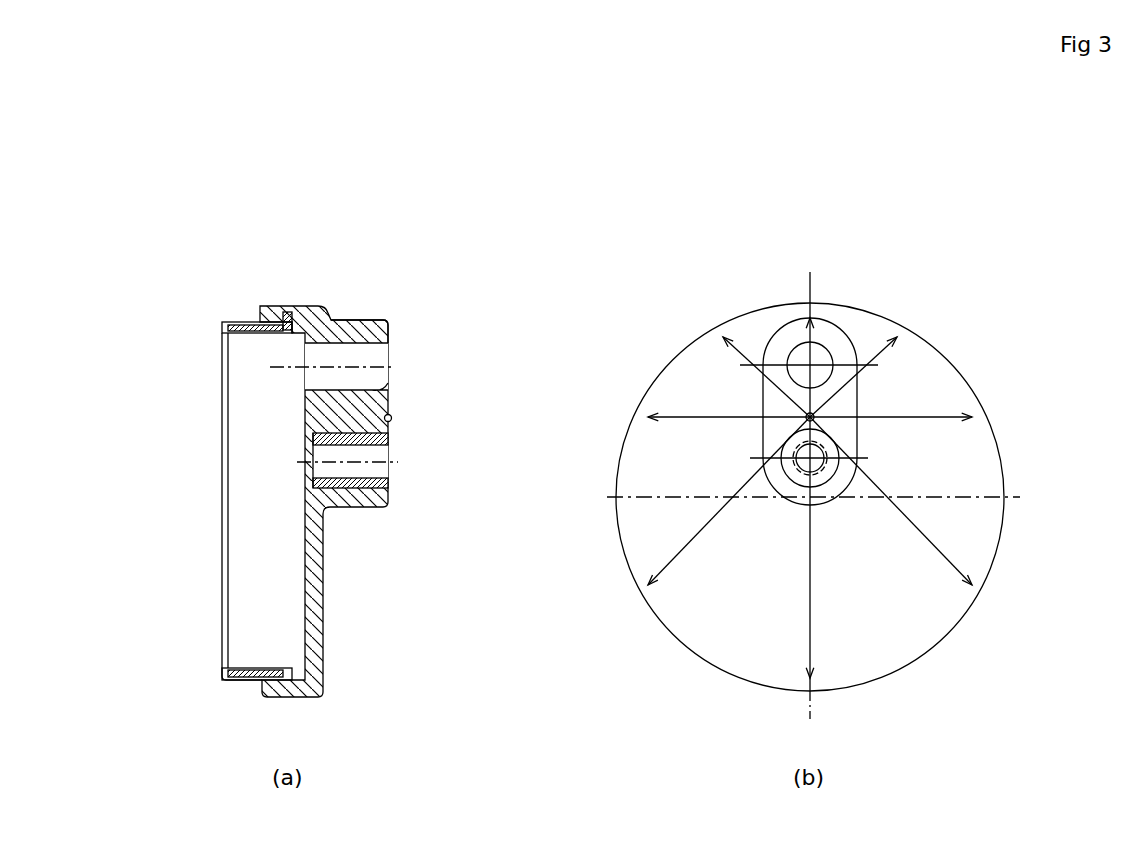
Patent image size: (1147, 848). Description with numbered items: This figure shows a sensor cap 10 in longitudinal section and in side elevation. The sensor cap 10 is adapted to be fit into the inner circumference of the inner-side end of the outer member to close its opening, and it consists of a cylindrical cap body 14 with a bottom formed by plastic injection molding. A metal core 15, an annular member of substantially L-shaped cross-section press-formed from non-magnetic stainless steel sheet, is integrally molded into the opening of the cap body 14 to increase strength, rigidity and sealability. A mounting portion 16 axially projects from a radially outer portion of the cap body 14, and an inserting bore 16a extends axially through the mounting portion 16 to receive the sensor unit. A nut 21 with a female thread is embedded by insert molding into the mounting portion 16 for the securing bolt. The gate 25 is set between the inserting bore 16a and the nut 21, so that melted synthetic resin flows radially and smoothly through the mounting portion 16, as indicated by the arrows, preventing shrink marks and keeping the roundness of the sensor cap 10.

The sensor cap 10 is at (338, 235).
The cap body 14 is at (336, 320).
The metal core 15 is at (283, 314).
The mounting portion 16 is at (361, 322).
The inserting bore 16a is at (388, 352).
The nut 21 is at (392, 490).
The gate 25 is at (392, 418).